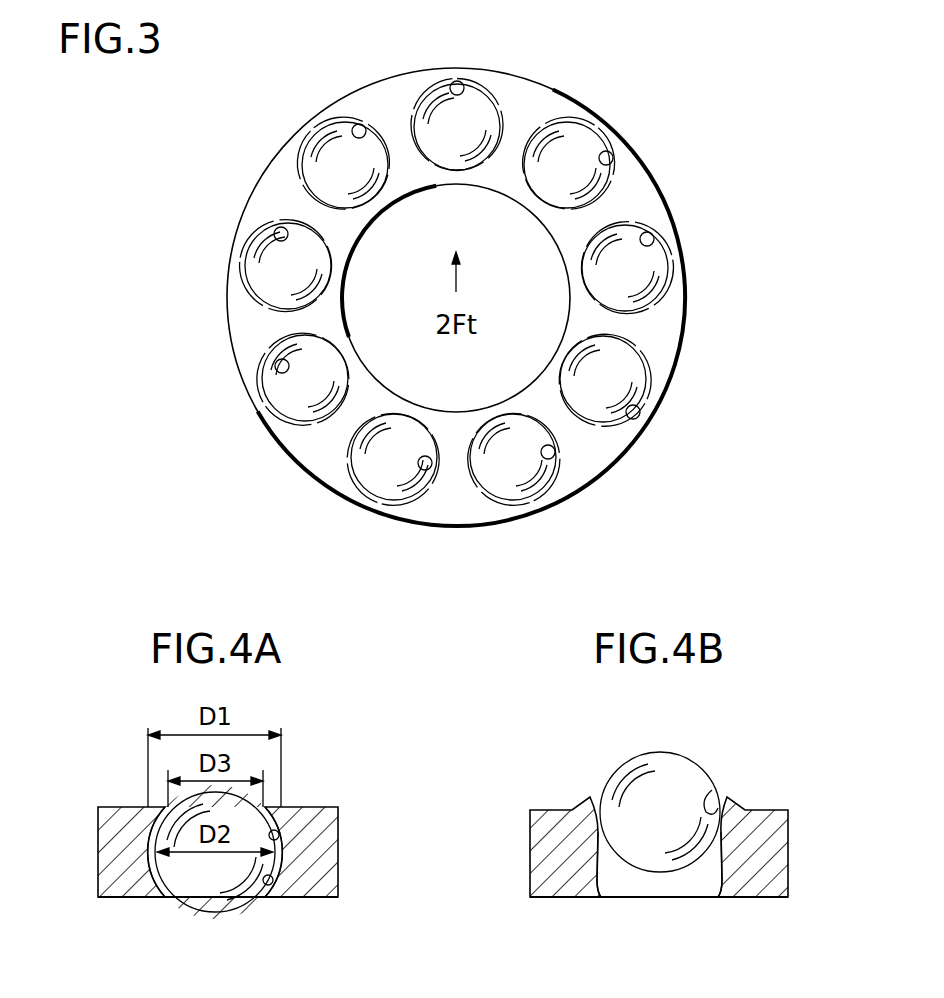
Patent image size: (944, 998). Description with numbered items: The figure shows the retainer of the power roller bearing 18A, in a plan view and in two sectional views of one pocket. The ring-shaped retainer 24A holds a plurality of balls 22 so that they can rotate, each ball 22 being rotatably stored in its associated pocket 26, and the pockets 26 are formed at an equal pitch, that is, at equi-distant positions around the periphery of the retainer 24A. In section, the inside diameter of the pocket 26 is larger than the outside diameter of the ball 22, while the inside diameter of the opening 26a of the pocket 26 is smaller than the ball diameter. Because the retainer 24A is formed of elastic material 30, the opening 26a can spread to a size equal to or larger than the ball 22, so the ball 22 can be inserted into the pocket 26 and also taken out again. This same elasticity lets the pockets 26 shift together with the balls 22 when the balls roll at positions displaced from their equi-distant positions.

In FIG. 3, the power roller bearing 18A is at (479, 293).
In FIG. 3, the ball 22 is at (485, 122).
In FIG. 4A, the ball 22 is at (203, 905).
In FIG. 4B, the ball 22 is at (632, 792).
In FIG. 3, the retainer 24A is at (690, 277).
In FIG. 4A, the retainer 24A is at (112, 806).
In FIG. 4B, the retainer 24A is at (550, 808).
In FIG. 3, the pocket 26 is at (468, 92).
In FIG. 4A, the pocket 26 is at (270, 868).
In FIG. 4B, the pocket 26 is at (628, 882).
In FIG. 3, the opening 26a is at (452, 86).
In FIG. 4A, the opening 26a is at (274, 800).
In FIG. 4B, the opening 26a is at (706, 805).
In FIG. 4A, the elastic material 30 is at (325, 840).
In FIG. 4B, the elastic material 30 is at (788, 842).